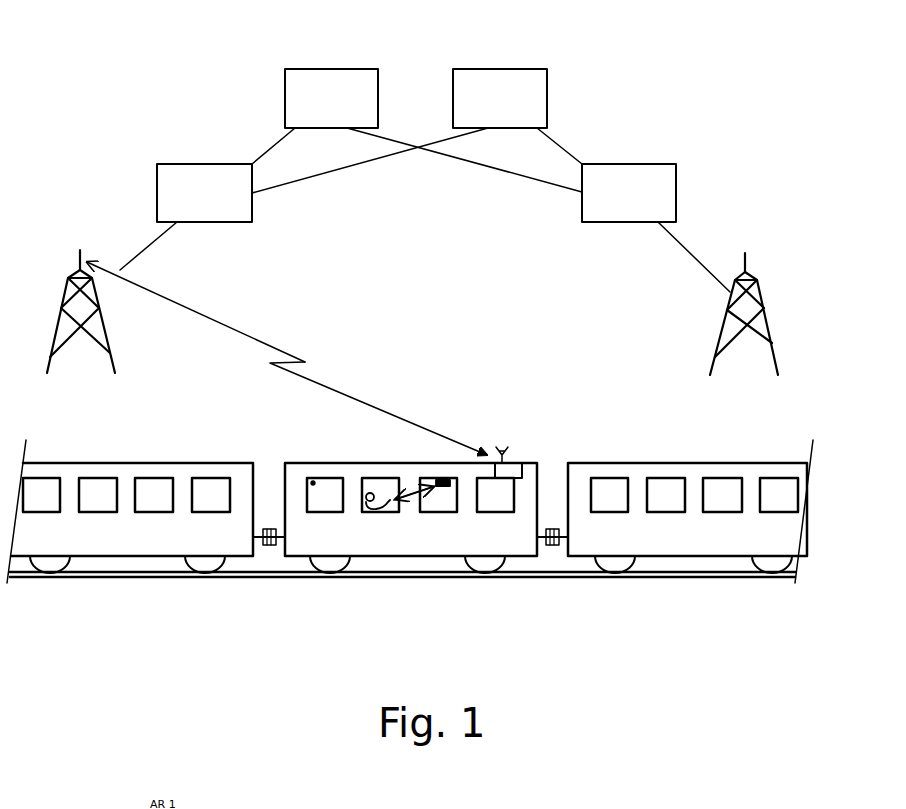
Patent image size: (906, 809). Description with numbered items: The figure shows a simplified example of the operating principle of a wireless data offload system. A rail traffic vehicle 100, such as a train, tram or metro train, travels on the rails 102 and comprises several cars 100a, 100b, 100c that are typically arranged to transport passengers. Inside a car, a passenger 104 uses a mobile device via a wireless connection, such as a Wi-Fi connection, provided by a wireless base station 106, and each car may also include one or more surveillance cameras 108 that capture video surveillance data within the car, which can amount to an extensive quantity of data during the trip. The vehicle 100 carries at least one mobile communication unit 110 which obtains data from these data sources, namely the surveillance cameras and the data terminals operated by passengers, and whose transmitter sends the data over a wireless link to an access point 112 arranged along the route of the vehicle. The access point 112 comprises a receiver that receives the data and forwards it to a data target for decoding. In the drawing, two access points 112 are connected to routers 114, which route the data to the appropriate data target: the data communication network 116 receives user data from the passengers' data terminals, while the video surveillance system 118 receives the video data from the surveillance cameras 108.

The rail traffic vehicle 100 is at (410, 502).
The car 100a is at (128, 472).
The car 100b is at (538, 468).
The car 100c is at (693, 470).
The rails 102 is at (378, 576).
The passenger 104 is at (370, 493).
The wireless base station 106 is at (443, 480).
The surveillance camera 108 is at (312, 480).
The mobile communication unit 110 is at (504, 468).
The access point 112 is at (66, 282).
The router 114 is at (172, 170).
The data communication network 116 is at (297, 75).
The video surveillance system 118 is at (537, 80).